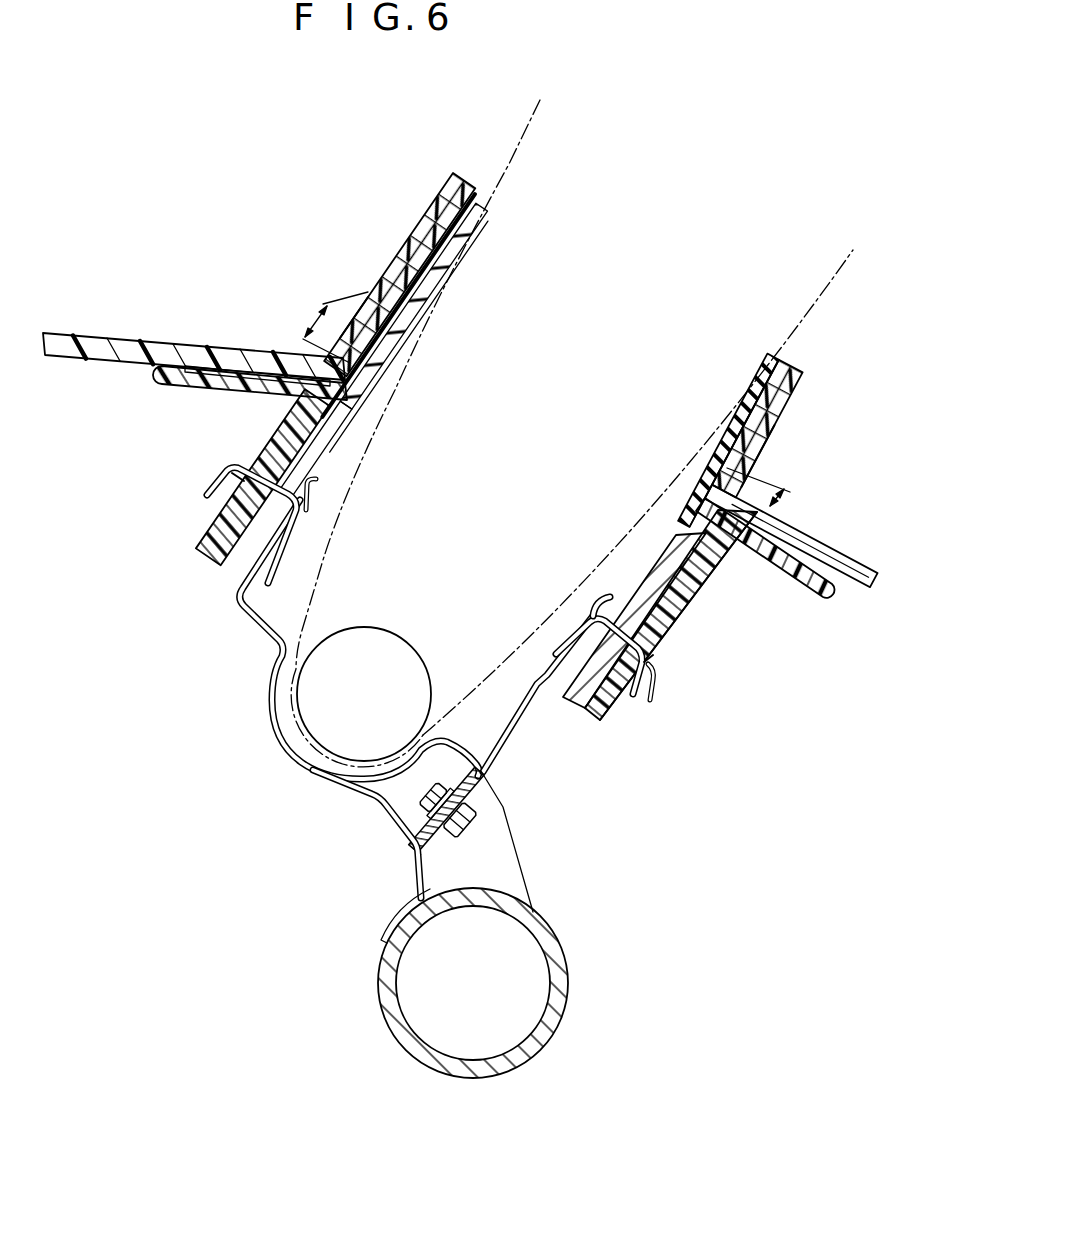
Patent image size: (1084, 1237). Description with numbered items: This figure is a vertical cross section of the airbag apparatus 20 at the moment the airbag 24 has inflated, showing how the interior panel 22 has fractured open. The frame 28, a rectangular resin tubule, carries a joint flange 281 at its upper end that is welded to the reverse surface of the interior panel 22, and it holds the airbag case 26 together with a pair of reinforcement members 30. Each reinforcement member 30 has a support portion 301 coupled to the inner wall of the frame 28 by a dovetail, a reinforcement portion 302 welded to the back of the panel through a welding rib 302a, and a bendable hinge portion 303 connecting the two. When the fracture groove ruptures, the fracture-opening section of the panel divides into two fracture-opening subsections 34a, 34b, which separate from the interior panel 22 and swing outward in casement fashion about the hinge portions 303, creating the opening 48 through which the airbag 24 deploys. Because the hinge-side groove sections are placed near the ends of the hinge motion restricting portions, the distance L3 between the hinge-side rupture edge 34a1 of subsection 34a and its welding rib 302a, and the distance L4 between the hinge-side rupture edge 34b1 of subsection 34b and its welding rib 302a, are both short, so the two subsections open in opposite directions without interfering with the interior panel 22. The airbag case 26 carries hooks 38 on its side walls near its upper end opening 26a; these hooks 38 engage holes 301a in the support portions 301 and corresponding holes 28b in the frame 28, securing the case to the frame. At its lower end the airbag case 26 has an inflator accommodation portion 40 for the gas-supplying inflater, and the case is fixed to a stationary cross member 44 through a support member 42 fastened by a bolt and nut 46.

The airbag apparatus 20 is at (360, 676).
The interior panel 22 is at (130, 327).
The airbag 24 is at (252, 628).
The airbag case 26 is at (526, 720).
The upper end opening 26a is at (588, 600).
The frame 28 is at (708, 588).
The joint flange 281 is at (193, 383).
The holes 28b is at (232, 474).
The reinforcement members 30 is at (213, 573).
The support portion 301 is at (308, 462).
The holes 301a is at (233, 500).
The reinforcement portion 302 is at (432, 290).
The welding rib 302a is at (359, 305).
The hinge portion 303 is at (360, 410).
The fracture-opening subsection 34a is at (422, 218).
The hinge-side rupture edge 34a1 is at (268, 346).
The fracture-opening subsection 34b is at (784, 398).
The hinge-side rupture edge 34b1 is at (752, 528).
The hooks 38 is at (242, 470).
The inflator accommodation portion 40 is at (291, 752).
The support member 42 is at (384, 814).
The cross member 44 is at (553, 917).
The bolt and nut 46 is at (473, 828).
The opening 48 is at (724, 378).
The distance L3 is at (322, 327).
The distance L4 is at (775, 497).